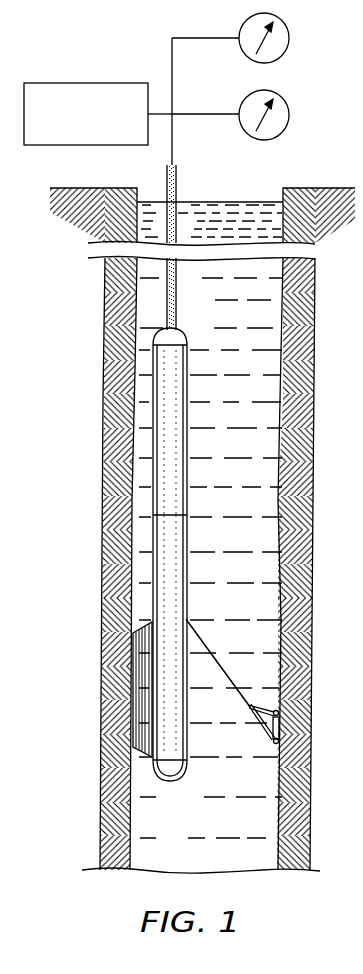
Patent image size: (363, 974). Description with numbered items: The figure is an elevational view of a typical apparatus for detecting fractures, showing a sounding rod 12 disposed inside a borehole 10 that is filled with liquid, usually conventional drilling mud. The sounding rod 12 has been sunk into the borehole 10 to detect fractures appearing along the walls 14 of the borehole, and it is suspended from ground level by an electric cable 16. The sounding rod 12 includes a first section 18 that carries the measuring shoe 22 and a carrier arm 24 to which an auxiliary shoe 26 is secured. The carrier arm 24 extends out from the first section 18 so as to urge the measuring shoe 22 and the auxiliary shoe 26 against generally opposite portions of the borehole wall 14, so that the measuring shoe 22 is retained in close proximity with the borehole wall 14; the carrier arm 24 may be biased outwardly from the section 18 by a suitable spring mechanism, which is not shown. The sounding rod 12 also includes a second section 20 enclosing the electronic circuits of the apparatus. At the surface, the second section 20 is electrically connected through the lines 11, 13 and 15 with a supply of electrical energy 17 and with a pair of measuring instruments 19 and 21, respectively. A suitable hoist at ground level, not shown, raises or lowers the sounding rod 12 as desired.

The borehole 10 is at (262, 510).
The line 11 is at (167, 152).
The sounding rod 12 is at (198, 449).
The line 13 is at (172, 60).
The borehole wall 14 is at (276, 566).
The line 15 is at (178, 152).
The electric cable 16 is at (170, 297).
The supply of electrical energy 17 is at (135, 83).
The first section 18 is at (180, 546).
The measuring instrument 19 is at (289, 38).
The second section 20 is at (181, 394).
The measuring instrument 21 is at (289, 118).
The measuring shoe 22 is at (143, 690).
The carrier arm 24 is at (222, 670).
The auxiliary shoe 26 is at (272, 748).